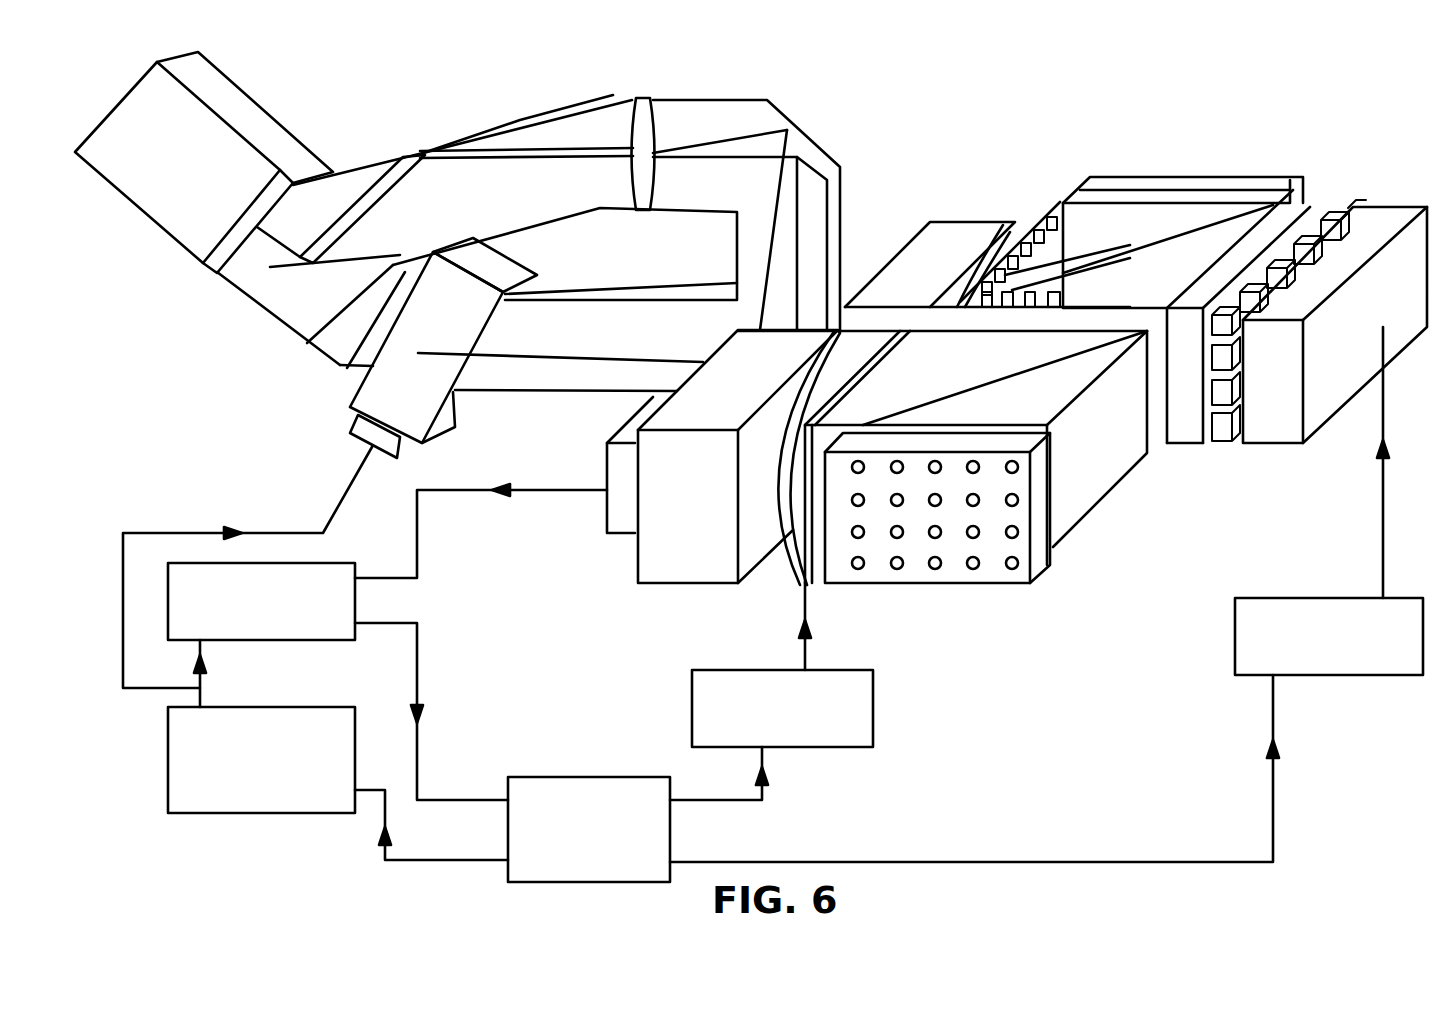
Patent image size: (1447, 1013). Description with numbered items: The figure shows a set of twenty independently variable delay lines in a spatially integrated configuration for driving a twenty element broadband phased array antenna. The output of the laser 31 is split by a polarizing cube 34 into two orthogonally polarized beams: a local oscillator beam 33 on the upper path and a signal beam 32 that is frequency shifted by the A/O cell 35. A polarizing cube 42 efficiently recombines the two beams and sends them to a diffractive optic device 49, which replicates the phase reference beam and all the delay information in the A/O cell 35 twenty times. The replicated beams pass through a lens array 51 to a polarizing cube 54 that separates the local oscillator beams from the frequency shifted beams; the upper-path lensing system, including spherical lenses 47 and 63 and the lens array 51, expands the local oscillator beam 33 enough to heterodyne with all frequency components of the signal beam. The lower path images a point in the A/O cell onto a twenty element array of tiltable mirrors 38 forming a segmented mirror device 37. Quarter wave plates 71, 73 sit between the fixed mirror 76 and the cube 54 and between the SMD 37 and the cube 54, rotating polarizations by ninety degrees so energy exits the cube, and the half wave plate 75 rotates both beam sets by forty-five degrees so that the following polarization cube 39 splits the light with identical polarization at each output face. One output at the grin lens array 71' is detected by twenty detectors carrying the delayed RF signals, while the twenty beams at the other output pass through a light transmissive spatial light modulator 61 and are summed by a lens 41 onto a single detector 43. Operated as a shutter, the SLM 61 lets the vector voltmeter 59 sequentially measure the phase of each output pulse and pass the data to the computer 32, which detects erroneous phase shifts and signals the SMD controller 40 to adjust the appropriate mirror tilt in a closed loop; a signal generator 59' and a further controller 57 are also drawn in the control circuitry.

The laser 31 is at (277, 120).
The local oscillator beam 33 is at (372, 197).
The polarizing cube 34 is at (262, 308).
The A/O cell 35 is at (450, 442).
The signal beam / computer 32 is at (633, 258).
The polarizing cube 42 is at (683, 284).
The spherical lens 47 is at (840, 330).
The diffractive optic device 49 is at (880, 260).
The spherical lens 63 is at (993, 262).
The lens array 51 is at (1060, 213).
The polarizing cube 54 is at (1122, 239).
The mirror 76 is at (1187, 177).
The half wave plate 75 is at (1150, 447).
The quarter wave plate 71 is at (1320, 211).
The quarter wave plate 73 is at (1226, 389).
The segmented mirror device 37 is at (1330, 427).
The tiltable mirrors 38 is at (1220, 445).
The polarization cube 39 is at (1090, 523).
The grin lens array 71' is at (937, 544).
The lens 41 is at (792, 550).
The spatial light modulator 61 is at (810, 412).
The detector 43 is at (612, 538).
The vector voltmeter 59 is at (365, 623).
The signal generator 59' is at (338, 750).
The controller 57 is at (782, 665).
The SMD controller 40 is at (1329, 501).